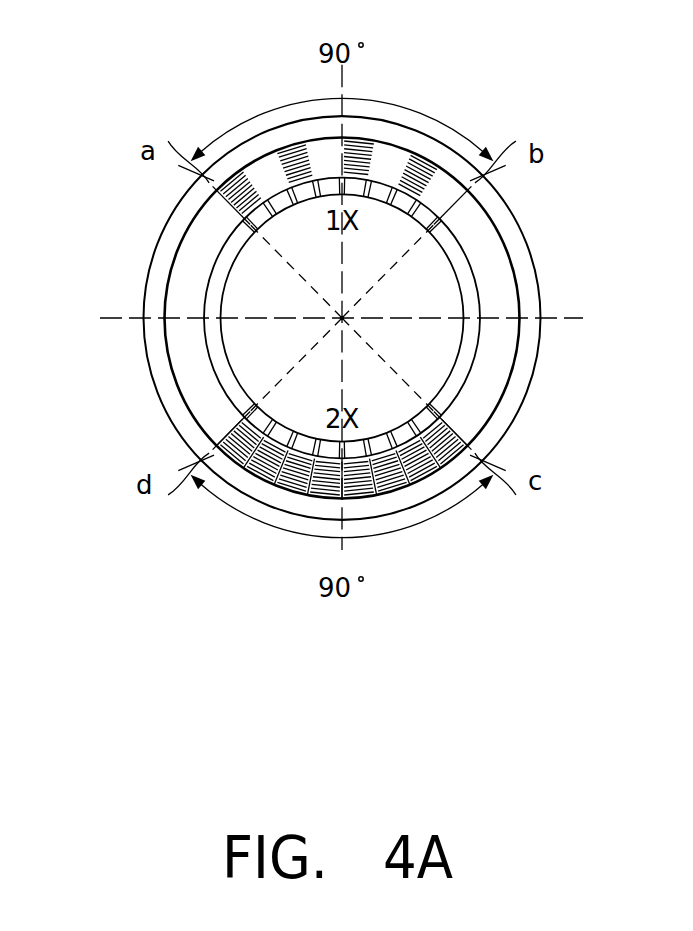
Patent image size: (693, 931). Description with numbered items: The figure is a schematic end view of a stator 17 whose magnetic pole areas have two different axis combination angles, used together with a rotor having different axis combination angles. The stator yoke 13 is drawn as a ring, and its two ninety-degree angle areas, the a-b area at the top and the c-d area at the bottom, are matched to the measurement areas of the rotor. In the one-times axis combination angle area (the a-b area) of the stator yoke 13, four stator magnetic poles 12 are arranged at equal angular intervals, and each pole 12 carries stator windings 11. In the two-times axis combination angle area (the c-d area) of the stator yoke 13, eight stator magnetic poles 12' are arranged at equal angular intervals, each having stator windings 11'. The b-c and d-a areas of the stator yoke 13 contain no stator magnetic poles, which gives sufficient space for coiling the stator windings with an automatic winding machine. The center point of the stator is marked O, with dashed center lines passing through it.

The stator windings 11 is at (342, 200).
The stator magnetic poles 12 is at (329, 137).
The stator yoke 13 is at (526, 237).
The stator windings 11' is at (361, 425).
The stator magnetic poles 12' is at (342, 494).
The stator 17 is at (114, 232).
The center axis O is at (346, 317).